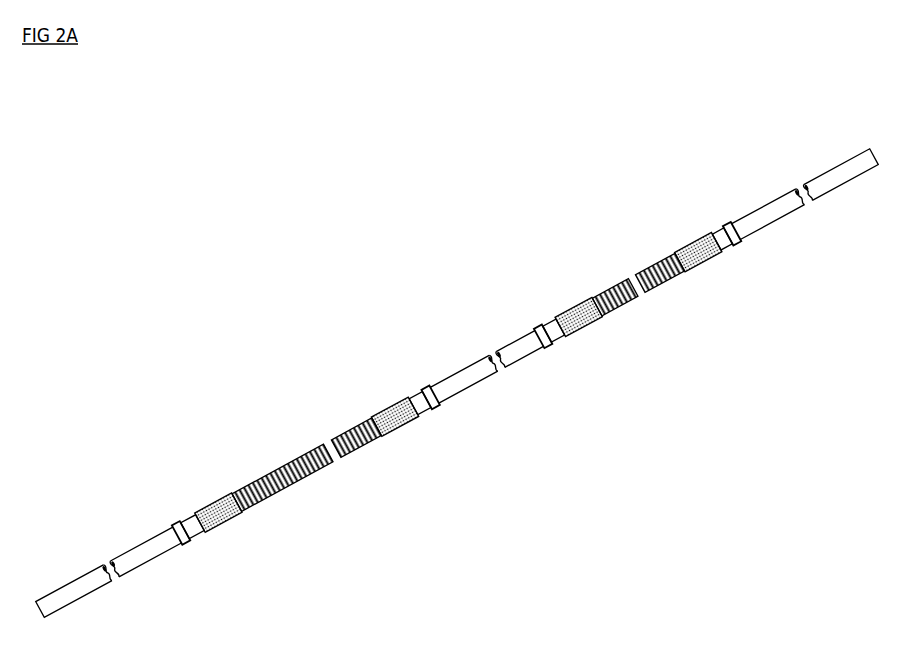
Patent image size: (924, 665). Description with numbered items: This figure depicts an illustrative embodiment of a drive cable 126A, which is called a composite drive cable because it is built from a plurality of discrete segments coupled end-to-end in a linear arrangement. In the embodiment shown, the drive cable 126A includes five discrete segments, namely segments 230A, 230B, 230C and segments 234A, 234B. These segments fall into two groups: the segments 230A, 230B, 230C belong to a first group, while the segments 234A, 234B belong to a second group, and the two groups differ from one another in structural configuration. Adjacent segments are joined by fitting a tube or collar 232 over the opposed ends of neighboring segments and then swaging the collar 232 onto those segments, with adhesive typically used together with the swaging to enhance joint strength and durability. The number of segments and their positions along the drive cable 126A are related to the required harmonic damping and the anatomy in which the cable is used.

The drive cable 126A is at (272, 258).
The segment 230A is at (140, 549).
The segment 230B is at (478, 357).
The segment 230C is at (772, 198).
The collar 232 is at (195, 508).
The segment 234A is at (280, 468).
The segment 234B is at (650, 265).